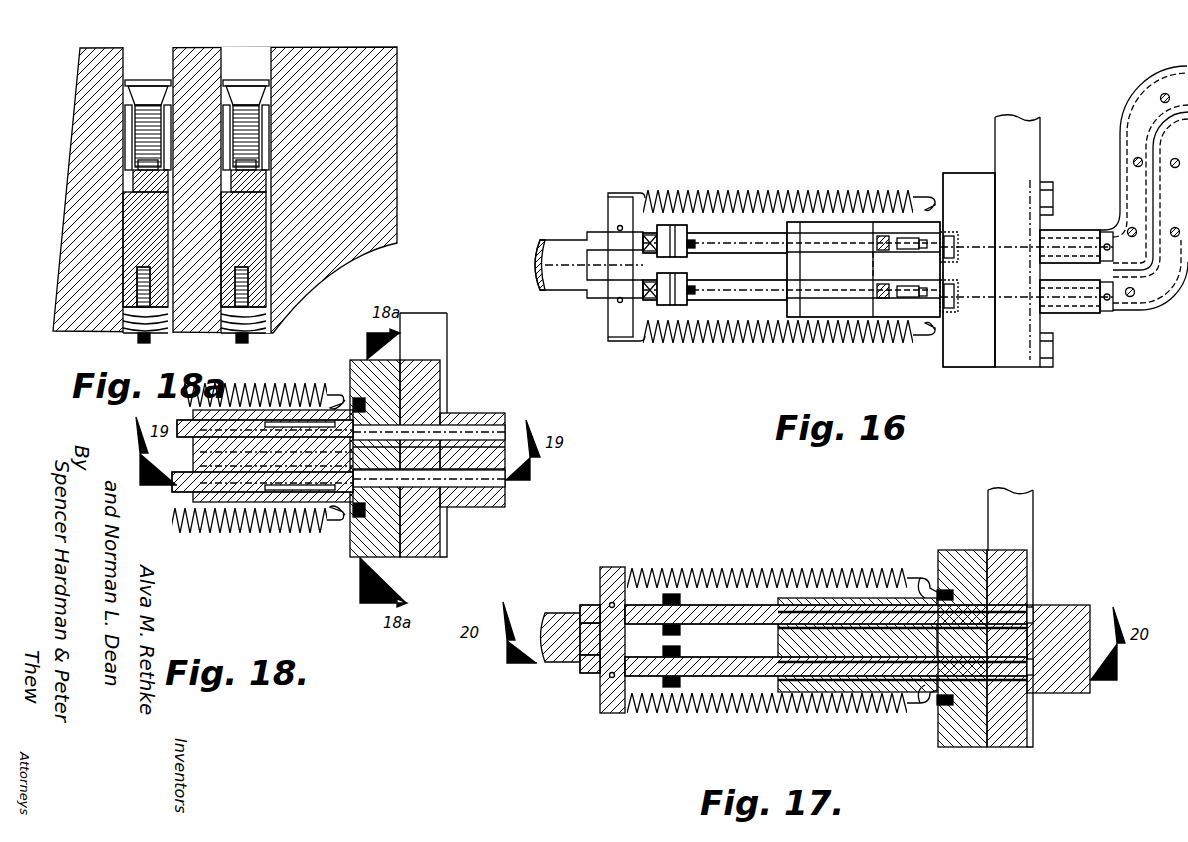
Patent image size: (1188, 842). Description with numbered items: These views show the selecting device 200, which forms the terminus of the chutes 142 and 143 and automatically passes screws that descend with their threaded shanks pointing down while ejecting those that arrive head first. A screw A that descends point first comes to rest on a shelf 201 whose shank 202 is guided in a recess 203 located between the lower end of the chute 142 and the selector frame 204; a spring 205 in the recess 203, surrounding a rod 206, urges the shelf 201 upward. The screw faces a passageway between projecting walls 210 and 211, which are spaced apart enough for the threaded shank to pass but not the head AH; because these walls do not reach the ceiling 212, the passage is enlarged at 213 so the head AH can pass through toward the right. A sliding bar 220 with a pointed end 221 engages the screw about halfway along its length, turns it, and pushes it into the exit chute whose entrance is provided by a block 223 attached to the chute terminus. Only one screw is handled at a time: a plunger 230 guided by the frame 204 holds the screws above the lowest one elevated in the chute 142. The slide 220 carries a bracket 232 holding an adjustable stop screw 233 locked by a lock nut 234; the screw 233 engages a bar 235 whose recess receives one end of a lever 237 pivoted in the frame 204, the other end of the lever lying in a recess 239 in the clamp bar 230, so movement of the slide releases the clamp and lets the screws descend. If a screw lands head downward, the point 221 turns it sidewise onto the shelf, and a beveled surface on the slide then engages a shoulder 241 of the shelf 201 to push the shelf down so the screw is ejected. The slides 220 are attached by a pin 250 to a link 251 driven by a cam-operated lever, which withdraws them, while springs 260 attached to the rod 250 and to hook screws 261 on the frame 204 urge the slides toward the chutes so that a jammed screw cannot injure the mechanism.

In FIG. 18A, the screw A is at (248, 145).
In FIG. 18A, the head AH is at (248, 92).
In FIG. 18, the chute 142 is at (358, 517).
In FIG. 16, the chute 142 is at (965, 312).
In FIG. 17, the chute 142 is at (955, 748).
In FIG. 18, the chute 143 is at (359, 398).
In FIG. 16, the chute 143 is at (960, 232).
In FIG. 17, the chute 143 is at (915, 590).
In FIG. 16, the selecting device 200 is at (912, 138).
In FIG. 18A, the shelf 201 is at (250, 205).
In FIG. 18A, the shank 202 is at (255, 235).
In FIG. 18A, the recess 203 is at (270, 305).
In FIG. 18A, the selector frame 204 is at (395, 245).
In FIG. 18, the selector frame 204 is at (380, 557).
In FIG. 16, the selector frame 204 is at (970, 185).
In FIG. 17, the selector frame 204 is at (785, 735).
In FIG. 18A, the spring 205 is at (262, 327).
In FIG. 18A, the rod 206 is at (248, 340).
In FIG. 18A, the projecting wall 210 is at (262, 152).
In FIG. 18A, the projecting wall 211 is at (258, 136).
In FIG. 18A, the ceiling 212 is at (265, 67).
In FIG. 18A, the enlarged portion of the passage 213 is at (265, 100).
In FIG. 18, the sliding bar 220 is at (178, 485).
In FIG. 16, the sliding bar 220 is at (722, 352).
In FIG. 17, the sliding bar 220 is at (745, 622).
In FIG. 16, the pointed end 221 is at (1055, 300).
In FIG. 17, the pointed end 221 is at (1040, 708).
In FIG. 18, the block 223 is at (467, 458).
In FIG. 16, the block 223 is at (1015, 355).
In FIG. 17, the block 223 is at (1060, 645).
In FIG. 16, the plunger 230 is at (880, 320).
In FIG. 16, the bracket 232 is at (690, 296).
In FIG. 17, the bracket 232 is at (680, 635).
In FIG. 16, the stop screw 233 is at (700, 278).
In FIG. 16, the lock nut 234 is at (660, 276).
In FIG. 16, the bar 235 is at (820, 250).
In FIG. 17, the bar 235 is at (857, 645).
In FIG. 16, the lever 237 is at (900, 300).
In FIG. 16, the recess 239 is at (922, 302).
In FIG. 18A, the shoulder 241 is at (262, 190).
In FIG. 16, the pin 250 is at (620, 215).
In FIG. 17, the pin 250 is at (600, 690).
In FIG. 16, the link 251 is at (555, 272).
In FIG. 17, the link 251 is at (562, 620).
In FIG. 18, the spring 260 is at (290, 533).
In FIG. 16, the spring 260 is at (655, 372).
In FIG. 17, the spring 260 is at (662, 735).
In FIG. 18, the hook screw 261 is at (318, 547).
In FIG. 16, the hook screw 261 is at (932, 200).
In FIG. 17, the hook screw 261 is at (915, 735).